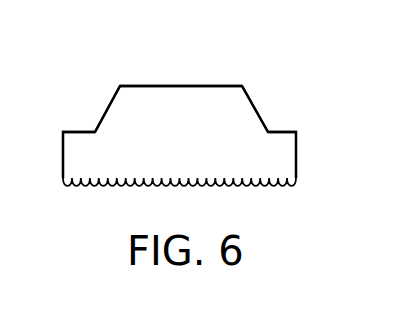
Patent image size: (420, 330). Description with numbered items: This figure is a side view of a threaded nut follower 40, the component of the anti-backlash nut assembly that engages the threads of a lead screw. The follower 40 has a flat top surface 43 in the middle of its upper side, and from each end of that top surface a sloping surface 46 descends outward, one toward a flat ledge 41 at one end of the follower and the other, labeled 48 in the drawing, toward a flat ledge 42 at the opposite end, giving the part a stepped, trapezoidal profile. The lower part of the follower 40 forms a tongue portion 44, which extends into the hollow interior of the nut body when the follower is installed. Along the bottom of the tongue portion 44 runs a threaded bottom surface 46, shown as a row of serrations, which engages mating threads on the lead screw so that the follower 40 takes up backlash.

The follower 40 is at (211, 49).
The flat ledge 41 is at (78, 131).
The flat ledge 42 is at (275, 125).
The flat top surface 43 is at (153, 85).
The threaded tongue portion 44 is at (147, 156).
The sloping surface / threaded bottom surface 46 is at (105, 110).
The right inclined side surface 48 is at (254, 104).